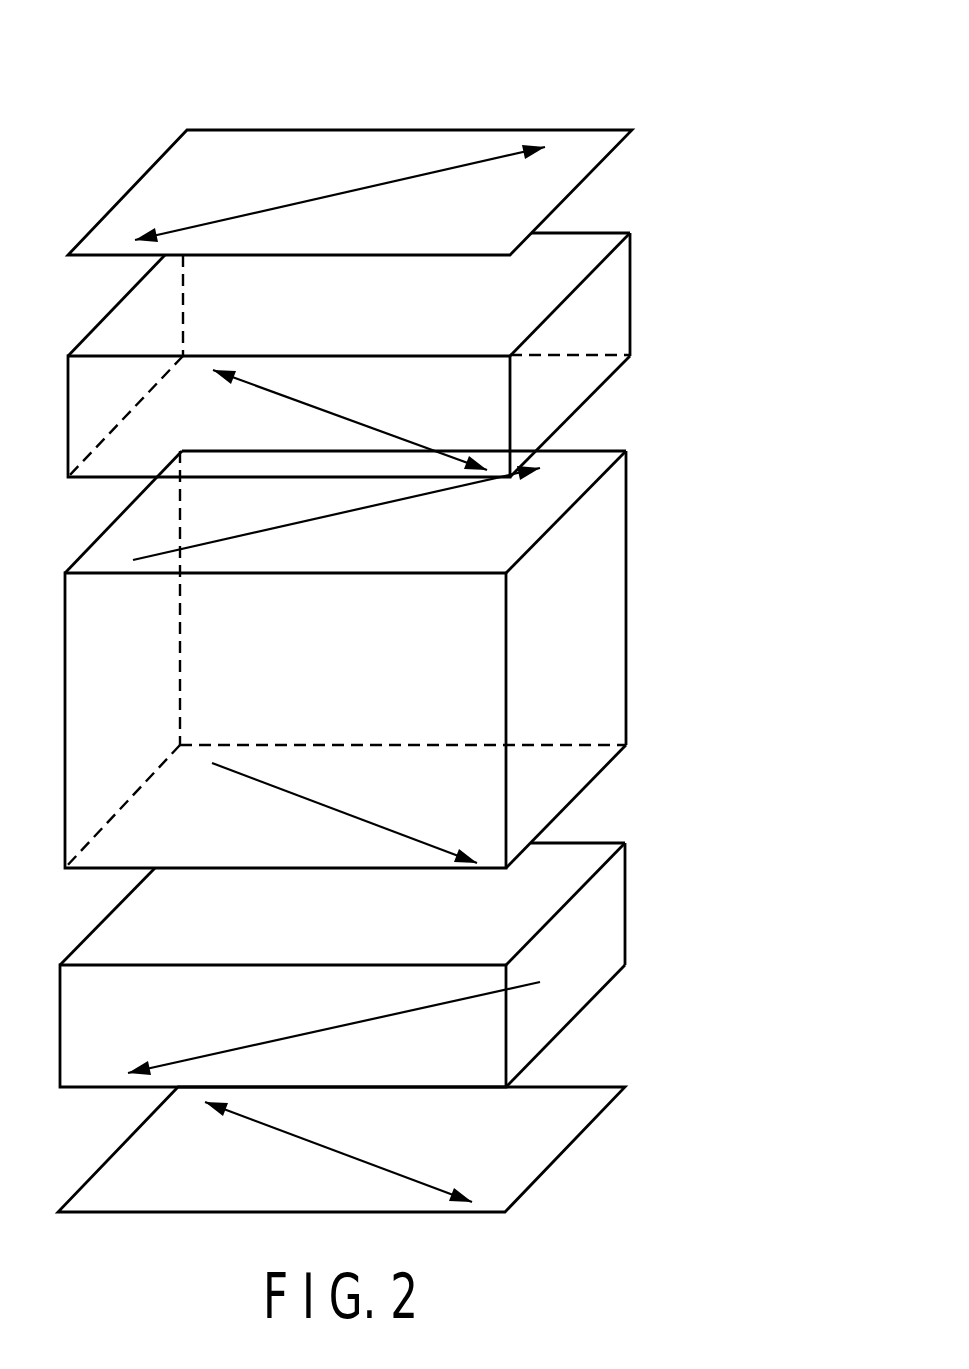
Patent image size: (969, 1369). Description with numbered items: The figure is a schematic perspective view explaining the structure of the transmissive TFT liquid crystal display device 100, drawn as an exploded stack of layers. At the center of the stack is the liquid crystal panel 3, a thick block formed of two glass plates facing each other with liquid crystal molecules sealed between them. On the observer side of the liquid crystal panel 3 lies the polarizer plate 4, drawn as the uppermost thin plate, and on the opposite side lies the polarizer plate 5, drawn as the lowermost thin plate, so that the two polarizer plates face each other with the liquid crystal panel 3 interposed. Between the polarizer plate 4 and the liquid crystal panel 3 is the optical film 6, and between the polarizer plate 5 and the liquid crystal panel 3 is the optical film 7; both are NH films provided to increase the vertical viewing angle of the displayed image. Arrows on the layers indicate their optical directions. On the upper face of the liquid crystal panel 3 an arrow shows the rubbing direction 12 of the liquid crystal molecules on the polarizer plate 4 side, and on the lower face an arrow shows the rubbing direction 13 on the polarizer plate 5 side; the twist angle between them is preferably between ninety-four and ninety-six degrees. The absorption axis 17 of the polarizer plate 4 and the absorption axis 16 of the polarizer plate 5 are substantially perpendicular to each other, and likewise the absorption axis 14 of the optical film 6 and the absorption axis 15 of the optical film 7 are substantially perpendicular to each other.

The transmissive TFT liquid crystal display device 100 is at (605, 100).
The polarizer plate 4 is at (577, 153).
The absorption axis 17 is at (333, 195).
The optical film 6 is at (595, 312).
The absorption axis 14 is at (343, 420).
The liquid crystal panel 3 is at (648, 555).
The rubbing direction 12 is at (273, 535).
The rubbing direction 13 is at (337, 810).
The optical film 7 is at (582, 922).
The absorption axis 15 is at (335, 1022).
The polarizer plate 5 is at (570, 1117).
The absorption axis 16 is at (335, 1153).